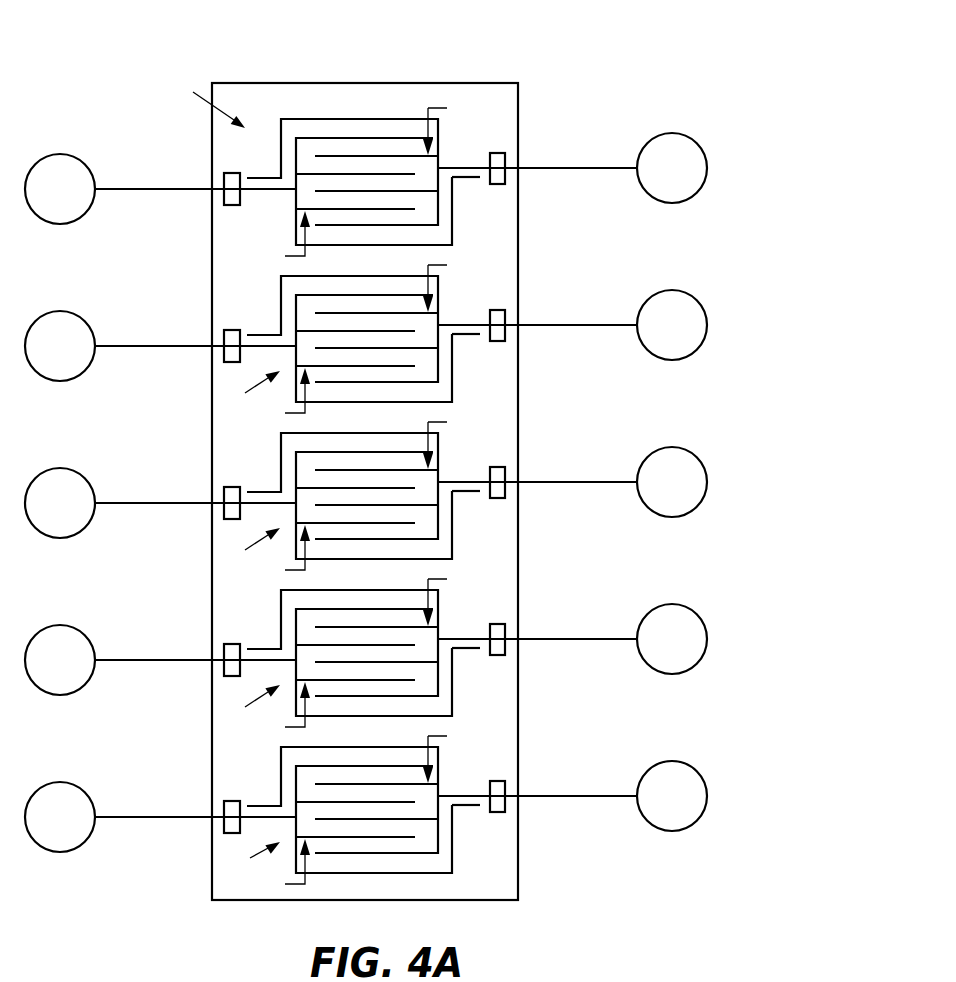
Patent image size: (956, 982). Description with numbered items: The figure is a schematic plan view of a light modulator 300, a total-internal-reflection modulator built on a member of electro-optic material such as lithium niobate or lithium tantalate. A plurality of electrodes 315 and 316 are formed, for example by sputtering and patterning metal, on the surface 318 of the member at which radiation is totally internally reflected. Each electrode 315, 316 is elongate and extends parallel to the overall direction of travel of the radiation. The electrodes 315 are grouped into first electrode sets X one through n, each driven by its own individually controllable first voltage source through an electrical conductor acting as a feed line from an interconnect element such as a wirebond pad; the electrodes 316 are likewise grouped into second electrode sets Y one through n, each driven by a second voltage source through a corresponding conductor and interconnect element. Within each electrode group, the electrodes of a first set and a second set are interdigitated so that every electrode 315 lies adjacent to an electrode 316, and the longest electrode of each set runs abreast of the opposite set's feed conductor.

The light modulator 300 is at (570, 48).
The surface 318 is at (506, 886).
The electrode 315 is at (314, 208).
The electrode 316 is at (419, 186).